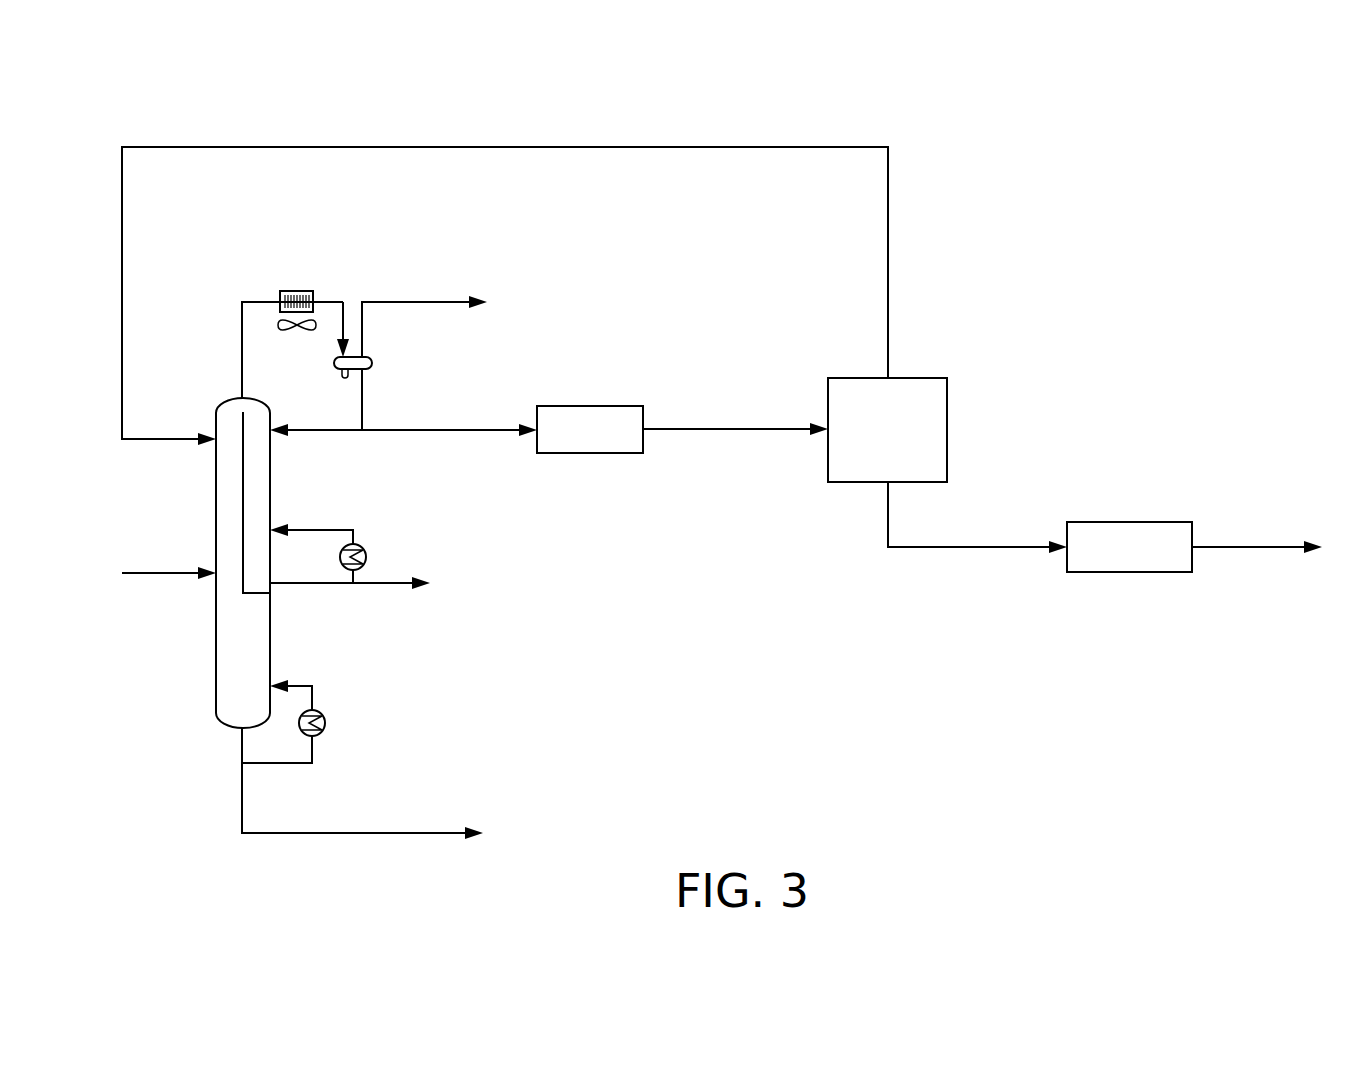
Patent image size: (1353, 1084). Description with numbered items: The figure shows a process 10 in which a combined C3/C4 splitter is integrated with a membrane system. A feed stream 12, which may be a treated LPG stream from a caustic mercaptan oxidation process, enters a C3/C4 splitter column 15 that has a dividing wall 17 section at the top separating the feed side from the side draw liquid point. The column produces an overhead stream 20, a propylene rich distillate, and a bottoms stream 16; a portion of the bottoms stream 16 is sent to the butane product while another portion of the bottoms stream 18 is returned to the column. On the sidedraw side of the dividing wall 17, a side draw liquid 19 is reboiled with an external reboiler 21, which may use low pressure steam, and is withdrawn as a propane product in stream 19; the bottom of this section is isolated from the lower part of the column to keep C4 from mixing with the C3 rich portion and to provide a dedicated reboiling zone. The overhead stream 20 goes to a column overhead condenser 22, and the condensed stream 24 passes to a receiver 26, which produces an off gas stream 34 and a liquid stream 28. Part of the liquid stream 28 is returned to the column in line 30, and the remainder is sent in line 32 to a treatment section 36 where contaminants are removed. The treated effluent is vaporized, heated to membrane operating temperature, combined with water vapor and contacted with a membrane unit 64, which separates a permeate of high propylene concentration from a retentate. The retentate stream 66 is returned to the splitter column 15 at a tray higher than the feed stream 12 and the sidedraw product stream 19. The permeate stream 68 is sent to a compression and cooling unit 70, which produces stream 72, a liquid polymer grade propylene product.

The process 10 is at (1256, 164).
The stream 12 is at (135, 573).
The C3/C4 splitter column 15 is at (272, 633).
The dividing wall 17 is at (243, 518).
The bottoms stream portion 18 is at (313, 747).
The side draw liquid 19 is at (400, 585).
The overhead stream 20 is at (242, 349).
The external reboiler 21 is at (340, 528).
The column overhead condenser 22 is at (300, 290).
The stream 24 is at (337, 300).
The receiver 26 is at (372, 363).
The liquid stream 28 is at (360, 396).
The line 30 is at (322, 432).
The line 32 is at (443, 432).
The off gas stream 34 is at (432, 300).
The treatment section 36 is at (591, 405).
The membrane unit 64 is at (947, 430).
The retentate stream 66 is at (701, 146).
The permeate stream 68 is at (979, 548).
The compression and cooling unit 70 is at (1128, 520).
The stream 72 is at (1240, 548).
The bottoms stream 16 is at (328, 833).